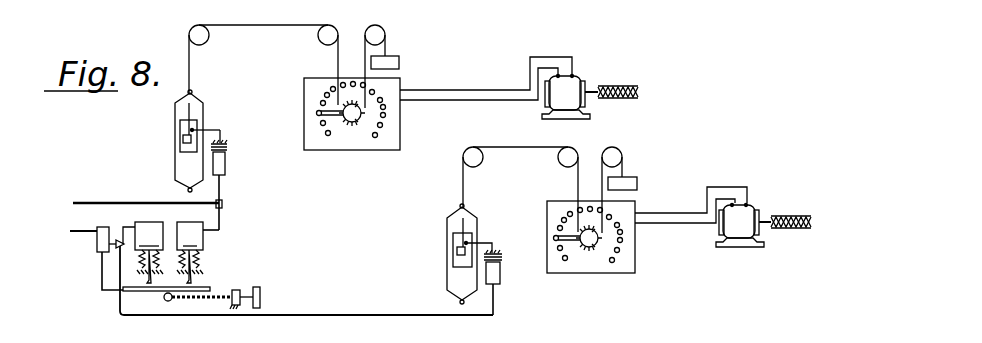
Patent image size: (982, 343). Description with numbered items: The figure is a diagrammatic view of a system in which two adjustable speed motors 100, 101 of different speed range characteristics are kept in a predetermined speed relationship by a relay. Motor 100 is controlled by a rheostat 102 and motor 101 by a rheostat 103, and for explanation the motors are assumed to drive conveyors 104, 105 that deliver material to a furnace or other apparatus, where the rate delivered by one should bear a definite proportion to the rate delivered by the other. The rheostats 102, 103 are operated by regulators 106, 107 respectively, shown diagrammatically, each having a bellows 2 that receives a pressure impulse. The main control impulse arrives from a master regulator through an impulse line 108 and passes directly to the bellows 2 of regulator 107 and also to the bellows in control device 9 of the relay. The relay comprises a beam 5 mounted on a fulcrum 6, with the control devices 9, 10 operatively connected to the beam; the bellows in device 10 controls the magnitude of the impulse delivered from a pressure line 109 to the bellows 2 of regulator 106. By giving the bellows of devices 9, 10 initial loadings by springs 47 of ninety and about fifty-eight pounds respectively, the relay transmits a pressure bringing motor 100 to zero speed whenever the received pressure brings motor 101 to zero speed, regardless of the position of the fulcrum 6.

The bellows 2 is at (228, 167).
The beam 5 is at (209, 289).
The fulcrum 6 is at (165, 299).
The control device 9 is at (190, 252).
The control device 10 is at (149, 252).
The spring 47 is at (140, 262).
The adjustable speed motor 100 is at (750, 212).
The adjustable speed motor 101 is at (573, 82).
The rheostat 102 is at (547, 212).
The rheostat 103 is at (397, 86).
The conveyor 104 is at (798, 228).
The conveyor 105 is at (631, 88).
The regulator 106 is at (434, 265).
The regulator 107 is at (160, 147).
The impulse line 108 is at (111, 203).
The pressure line 109 is at (88, 235).